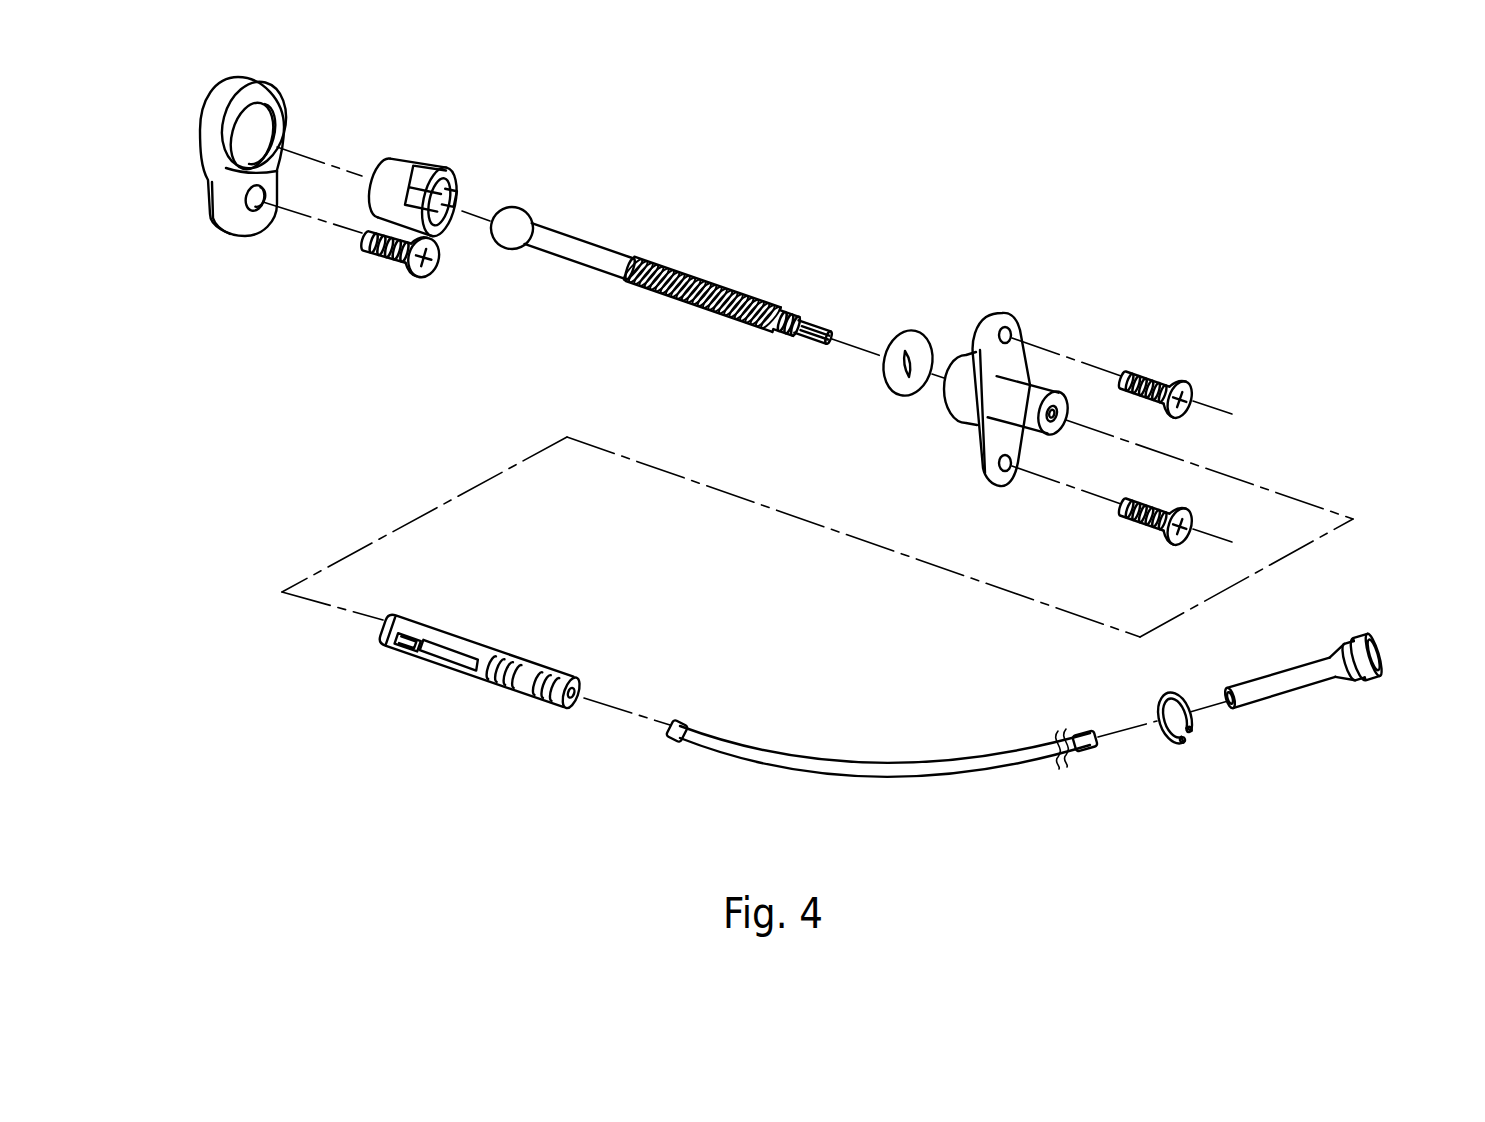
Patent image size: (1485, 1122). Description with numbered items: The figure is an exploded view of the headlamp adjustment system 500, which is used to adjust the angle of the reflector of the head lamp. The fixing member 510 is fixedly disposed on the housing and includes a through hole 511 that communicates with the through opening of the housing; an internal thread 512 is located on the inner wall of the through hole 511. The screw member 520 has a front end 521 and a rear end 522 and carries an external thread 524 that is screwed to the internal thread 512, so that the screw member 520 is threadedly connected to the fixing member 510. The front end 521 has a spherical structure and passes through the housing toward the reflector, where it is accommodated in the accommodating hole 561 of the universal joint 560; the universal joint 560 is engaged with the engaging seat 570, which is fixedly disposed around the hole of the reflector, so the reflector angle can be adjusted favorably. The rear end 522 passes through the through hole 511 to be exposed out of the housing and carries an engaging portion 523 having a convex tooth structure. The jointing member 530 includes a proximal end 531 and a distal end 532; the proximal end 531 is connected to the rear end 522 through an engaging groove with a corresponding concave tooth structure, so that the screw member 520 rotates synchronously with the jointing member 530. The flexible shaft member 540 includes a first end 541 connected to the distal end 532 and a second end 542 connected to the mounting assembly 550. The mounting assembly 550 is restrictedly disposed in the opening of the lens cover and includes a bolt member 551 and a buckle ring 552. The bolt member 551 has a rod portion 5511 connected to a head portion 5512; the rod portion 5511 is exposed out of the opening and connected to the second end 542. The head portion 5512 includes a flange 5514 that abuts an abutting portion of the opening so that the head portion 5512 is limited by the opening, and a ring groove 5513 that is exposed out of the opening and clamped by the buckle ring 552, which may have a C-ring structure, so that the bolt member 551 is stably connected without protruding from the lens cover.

The headlamp adjustment system 500 is at (105, 85).
The fixing member 510 is at (992, 442).
The through hole 511 is at (1052, 425).
The internal thread 512 is at (1052, 410).
The screw member 520 is at (594, 94).
The front end 521 is at (520, 213).
The rear end 522 is at (832, 332).
The engaging portion 523 is at (808, 317).
The external thread 524 is at (690, 277).
The jointing member 530 is at (589, 564).
The proximal end 531 is at (385, 620).
The distal end 532 is at (583, 678).
The flexible shaft member 540 is at (968, 636).
The first end 541 is at (680, 729).
The second end 542 is at (1084, 735).
The mounting assembly 550 is at (1213, 856).
The bolt member 551 is at (1425, 773).
The rod portion 5511 is at (1263, 698).
The head portion 5512 is at (1346, 690).
The ring groove 5513 is at (1368, 692).
The flange 5514 is at (1356, 643).
The buckle ring 552 is at (1177, 746).
The universal joint 560 is at (398, 158).
The accommodating hole 561 is at (447, 208).
The engaging seat 570 is at (248, 84).